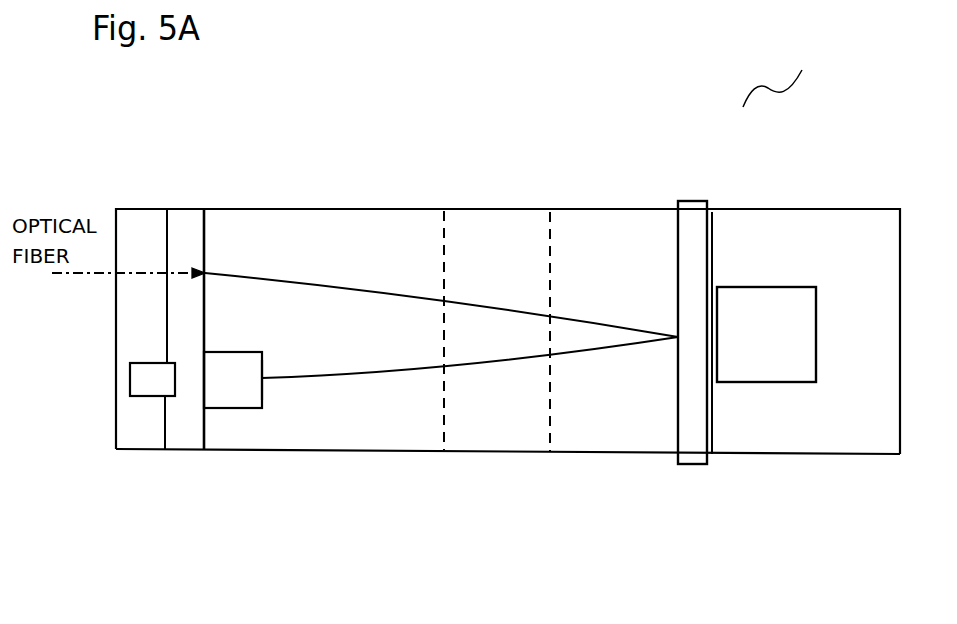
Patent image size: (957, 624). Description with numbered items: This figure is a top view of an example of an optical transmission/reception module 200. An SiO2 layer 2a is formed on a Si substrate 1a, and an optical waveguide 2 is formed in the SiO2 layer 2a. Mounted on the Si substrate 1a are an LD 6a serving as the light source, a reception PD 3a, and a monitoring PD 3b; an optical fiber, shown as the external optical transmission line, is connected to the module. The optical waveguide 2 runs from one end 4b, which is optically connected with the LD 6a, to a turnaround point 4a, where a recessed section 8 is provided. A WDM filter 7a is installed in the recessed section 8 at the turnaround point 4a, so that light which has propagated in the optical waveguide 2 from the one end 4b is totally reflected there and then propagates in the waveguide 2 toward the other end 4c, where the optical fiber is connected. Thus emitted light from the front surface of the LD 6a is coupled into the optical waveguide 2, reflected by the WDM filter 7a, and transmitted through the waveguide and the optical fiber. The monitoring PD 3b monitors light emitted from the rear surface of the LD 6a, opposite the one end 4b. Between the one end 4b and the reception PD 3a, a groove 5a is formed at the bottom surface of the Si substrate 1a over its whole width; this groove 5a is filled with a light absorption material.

The optical module 200 is at (781, 73).
The Si substrate 1a is at (750, 212).
The optical waveguide 2 is at (537, 362).
The SiO2 layer 2a is at (368, 450).
The reception PD 3a is at (747, 383).
The monitoring PD 3b is at (153, 397).
The turnaround point 4a is at (678, 338).
The one end 4b is at (261, 388).
The other end 4c is at (203, 276).
The groove 5a is at (445, 451).
The LD 6a is at (228, 409).
The WDM filter 7a is at (690, 465).
The recessed section 8 is at (712, 454).